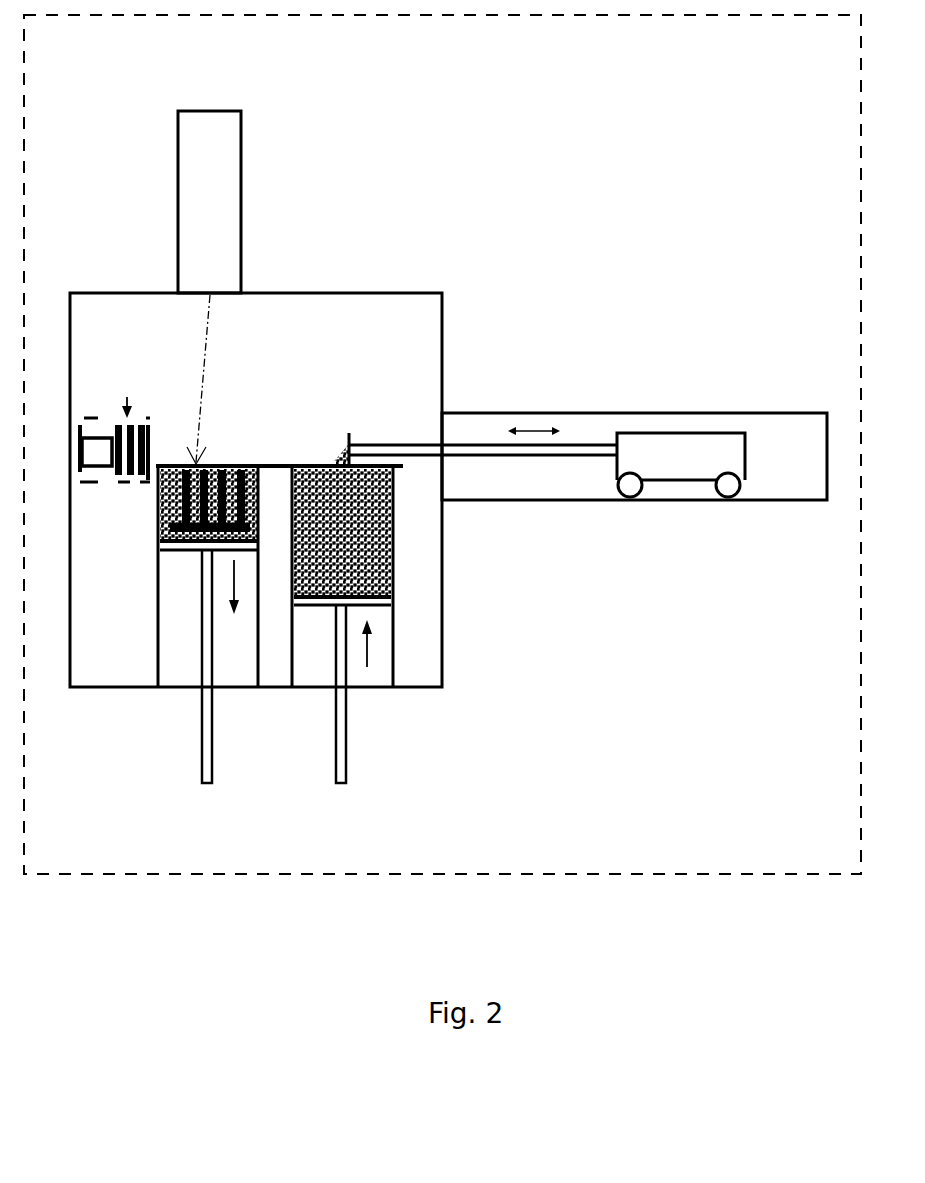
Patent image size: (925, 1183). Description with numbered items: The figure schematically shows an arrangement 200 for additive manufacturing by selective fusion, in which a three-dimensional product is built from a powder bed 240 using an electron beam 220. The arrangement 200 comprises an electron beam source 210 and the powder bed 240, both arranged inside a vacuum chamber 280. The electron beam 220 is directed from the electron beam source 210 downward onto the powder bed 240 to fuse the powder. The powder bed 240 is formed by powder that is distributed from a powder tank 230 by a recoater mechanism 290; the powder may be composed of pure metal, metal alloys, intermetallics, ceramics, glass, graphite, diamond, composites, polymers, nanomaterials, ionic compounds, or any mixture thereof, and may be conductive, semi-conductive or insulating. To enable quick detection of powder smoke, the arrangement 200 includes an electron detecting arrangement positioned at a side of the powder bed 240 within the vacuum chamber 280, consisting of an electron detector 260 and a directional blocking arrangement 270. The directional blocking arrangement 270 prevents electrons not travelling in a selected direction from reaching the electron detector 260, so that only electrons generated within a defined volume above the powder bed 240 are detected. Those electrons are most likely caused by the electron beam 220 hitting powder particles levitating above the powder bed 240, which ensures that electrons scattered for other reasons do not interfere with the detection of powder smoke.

The arrangement 200 is at (807, 99).
The electron beam source 210 is at (241, 193).
The electron beam 220 is at (205, 362).
The powder tank 230 is at (393, 527).
The powder bed 240 is at (257, 465).
The electron detector 260 is at (93, 472).
The directional blocking arrangement 270 is at (119, 424).
The vacuum chamber 280 is at (414, 354).
The recoater mechanism 290 is at (680, 432).